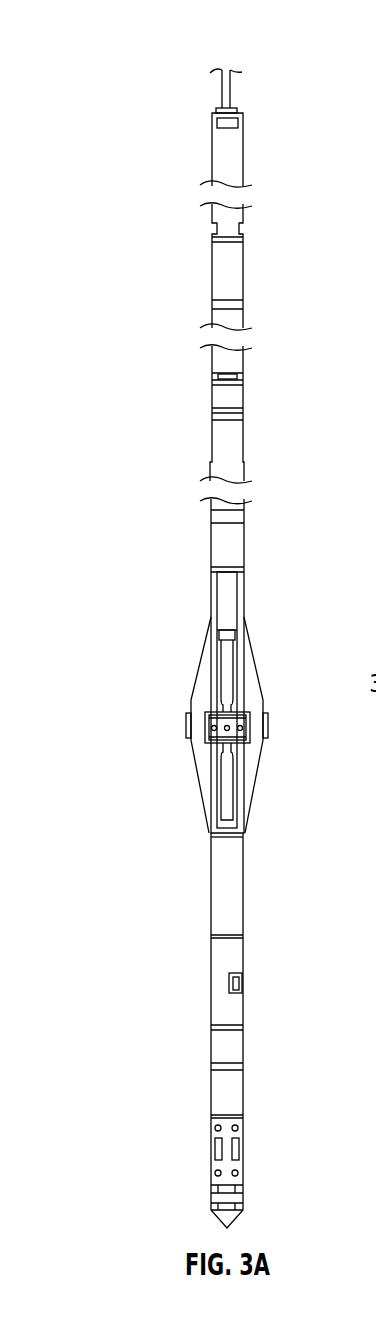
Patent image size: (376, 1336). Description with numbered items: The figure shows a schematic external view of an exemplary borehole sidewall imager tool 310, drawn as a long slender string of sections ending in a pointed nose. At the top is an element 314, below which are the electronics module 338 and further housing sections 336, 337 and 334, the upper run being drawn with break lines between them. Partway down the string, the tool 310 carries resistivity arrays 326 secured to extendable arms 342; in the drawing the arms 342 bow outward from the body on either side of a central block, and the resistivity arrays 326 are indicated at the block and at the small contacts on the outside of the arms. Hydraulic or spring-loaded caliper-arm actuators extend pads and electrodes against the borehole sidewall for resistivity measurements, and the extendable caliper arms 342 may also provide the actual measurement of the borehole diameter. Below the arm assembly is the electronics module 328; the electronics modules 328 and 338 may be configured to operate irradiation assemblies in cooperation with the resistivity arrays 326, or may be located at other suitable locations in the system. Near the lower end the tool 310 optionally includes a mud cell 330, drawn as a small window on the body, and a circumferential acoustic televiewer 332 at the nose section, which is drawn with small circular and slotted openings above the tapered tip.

The borehole sidewall imager tool 310 is at (123, 81).
The wireline / cable head rod 314 is at (231, 96).
The electronics module 338 is at (243, 157).
The tool section 336 is at (243, 275).
The tool section 337 is at (243, 435).
The tool housing section 334 is at (244, 545).
The extendable arms 342 is at (202, 667).
The resistivity arrays 326 is at (186, 722).
The electronics module 328 is at (243, 890).
The mud cell 330 is at (242, 985).
The circumferential acoustic televiewer 332 is at (243, 1150).